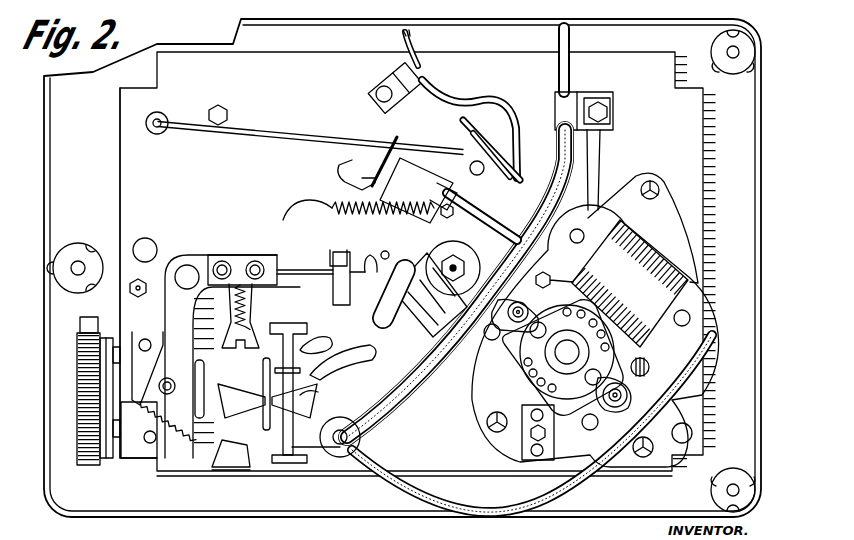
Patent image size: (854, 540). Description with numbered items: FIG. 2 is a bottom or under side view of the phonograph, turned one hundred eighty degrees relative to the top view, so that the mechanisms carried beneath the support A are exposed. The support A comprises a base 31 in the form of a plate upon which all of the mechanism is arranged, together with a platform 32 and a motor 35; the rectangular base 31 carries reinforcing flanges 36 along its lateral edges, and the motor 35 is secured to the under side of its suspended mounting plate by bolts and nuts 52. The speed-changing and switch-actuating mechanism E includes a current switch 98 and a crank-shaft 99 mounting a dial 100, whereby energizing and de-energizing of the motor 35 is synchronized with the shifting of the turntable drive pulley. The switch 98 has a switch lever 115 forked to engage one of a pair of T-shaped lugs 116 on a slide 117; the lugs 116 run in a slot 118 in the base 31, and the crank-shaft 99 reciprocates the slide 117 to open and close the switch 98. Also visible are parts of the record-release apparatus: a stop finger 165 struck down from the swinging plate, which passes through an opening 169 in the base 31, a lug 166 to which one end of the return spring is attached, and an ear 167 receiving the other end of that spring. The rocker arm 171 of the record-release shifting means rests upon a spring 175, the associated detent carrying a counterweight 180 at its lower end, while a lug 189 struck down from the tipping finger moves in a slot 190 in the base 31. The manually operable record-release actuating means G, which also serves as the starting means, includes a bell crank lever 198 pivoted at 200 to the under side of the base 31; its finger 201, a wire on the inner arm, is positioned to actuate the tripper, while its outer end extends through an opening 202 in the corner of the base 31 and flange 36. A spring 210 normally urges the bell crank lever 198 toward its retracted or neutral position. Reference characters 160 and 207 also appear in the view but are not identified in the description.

The support A is at (133, 189).
The speed-changing and switch-actuating mechanism E is at (69, 368).
The manually operable record-release actuating means G is at (147, 471).
The base 31 is at (232, 183).
The platform 32 is at (748, 128).
The motor 35 is at (500, 366).
The reinforcing flanges 36 is at (480, 52).
The bolts and nuts 52 is at (632, 311).
The current switch 98 is at (339, 457).
The crank-shaft 99 is at (443, 216).
The dial 100 is at (96, 468).
The switch lever 115 is at (309, 463).
The lugs 116 is at (346, 393).
The slide 117 is at (262, 380).
The slot 118 is at (308, 331).
The spring anchor 160 is at (380, 238).
The stop 165 is at (395, 152).
The lug 166 is at (318, 202).
The ear 167 is at (433, 190).
The opening 169 is at (350, 160).
The rocker arm 171 is at (491, 160).
The spring 175 is at (508, 206).
The counterweight 180 is at (365, 346).
The second lug 189 is at (336, 361).
The slot 190 is at (337, 379).
The bell crank lever 198 is at (172, 326).
The pivot 200 is at (189, 272).
The finger 201 is at (291, 270).
The opening 202 is at (229, 467).
The base plate 207 is at (214, 467).
The spring 210 is at (256, 312).